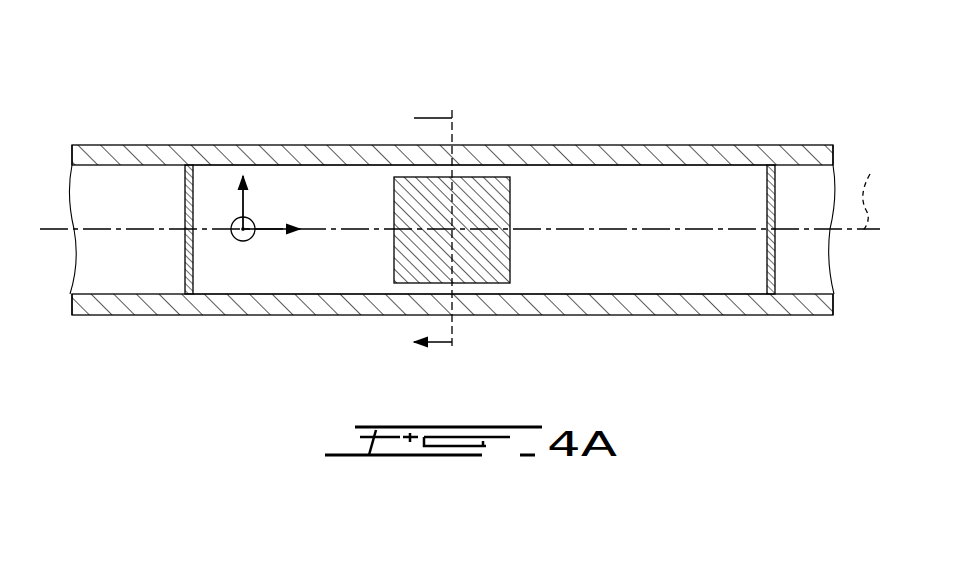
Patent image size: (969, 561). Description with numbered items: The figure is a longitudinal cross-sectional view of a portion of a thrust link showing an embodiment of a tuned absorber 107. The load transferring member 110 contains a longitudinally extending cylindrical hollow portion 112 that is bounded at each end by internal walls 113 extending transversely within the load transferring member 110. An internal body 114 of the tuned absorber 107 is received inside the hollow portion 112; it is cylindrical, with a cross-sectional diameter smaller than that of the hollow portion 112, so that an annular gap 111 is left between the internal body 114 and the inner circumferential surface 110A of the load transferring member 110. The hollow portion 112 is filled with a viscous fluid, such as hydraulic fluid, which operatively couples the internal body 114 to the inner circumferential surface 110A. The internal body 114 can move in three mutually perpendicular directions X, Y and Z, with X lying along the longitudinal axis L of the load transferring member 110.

The tuned absorber 107 is at (357, 115).
The load transferring member 110 is at (702, 142).
The inner circumferential surface 110A is at (673, 166).
The annular gap 111 is at (512, 173).
The hollow portion 112 is at (718, 252).
The internal walls 113 is at (190, 192).
The internal body 114 is at (390, 263).